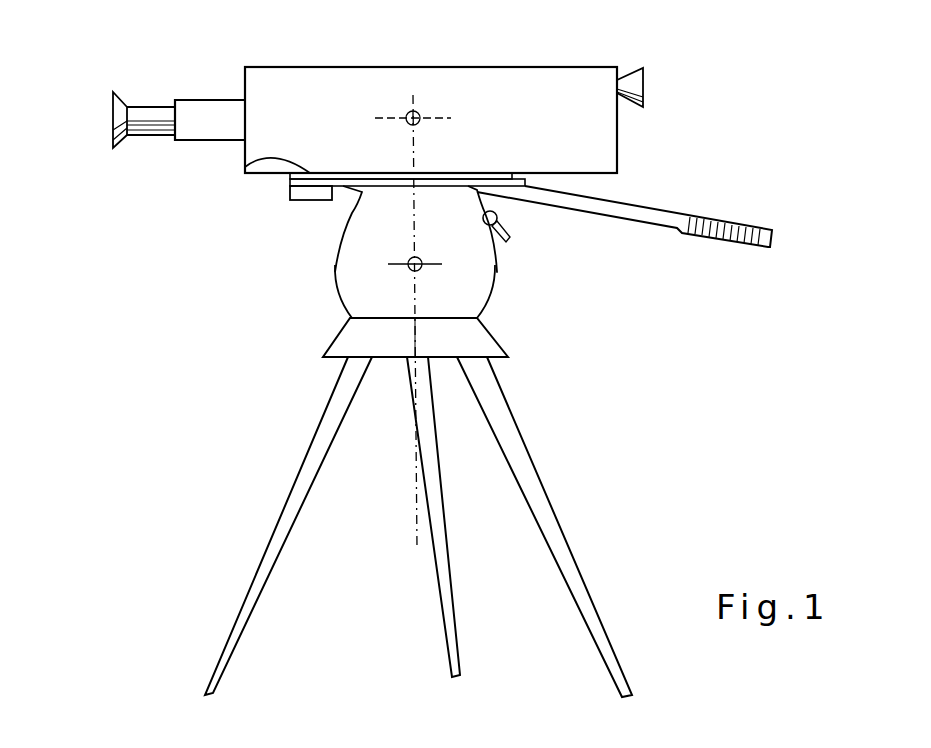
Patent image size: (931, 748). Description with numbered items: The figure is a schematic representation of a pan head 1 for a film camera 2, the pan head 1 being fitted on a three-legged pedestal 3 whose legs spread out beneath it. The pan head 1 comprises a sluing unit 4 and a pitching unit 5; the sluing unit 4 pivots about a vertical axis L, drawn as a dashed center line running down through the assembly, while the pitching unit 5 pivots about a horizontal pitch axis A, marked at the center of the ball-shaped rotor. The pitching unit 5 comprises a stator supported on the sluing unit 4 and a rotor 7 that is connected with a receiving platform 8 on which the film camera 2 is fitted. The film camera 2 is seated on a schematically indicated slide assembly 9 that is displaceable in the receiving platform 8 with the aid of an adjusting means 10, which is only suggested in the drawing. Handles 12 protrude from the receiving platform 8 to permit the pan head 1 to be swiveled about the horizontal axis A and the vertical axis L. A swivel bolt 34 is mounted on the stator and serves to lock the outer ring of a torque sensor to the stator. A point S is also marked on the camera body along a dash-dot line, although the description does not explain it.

The pan head 1 is at (227, 283).
The film camera 2 is at (283, 75).
The three-legged pedestal 3 is at (307, 453).
The sluing unit 4 is at (327, 341).
The pitching unit 5 is at (497, 281).
The rotor 7 is at (333, 282).
The receiving platform 8 is at (343, 190).
The slide assembly 9 is at (233, 165).
The adjusting means 10 is at (293, 201).
The handles 12 is at (745, 227).
The swivel bolt 34 is at (508, 231).
The sighting axis point S is at (420, 108).
The horizontal pitch axis A is at (410, 271).
The vertical axis L is at (417, 490).